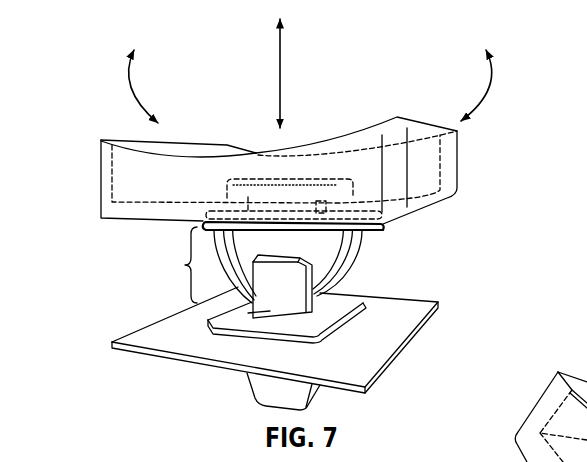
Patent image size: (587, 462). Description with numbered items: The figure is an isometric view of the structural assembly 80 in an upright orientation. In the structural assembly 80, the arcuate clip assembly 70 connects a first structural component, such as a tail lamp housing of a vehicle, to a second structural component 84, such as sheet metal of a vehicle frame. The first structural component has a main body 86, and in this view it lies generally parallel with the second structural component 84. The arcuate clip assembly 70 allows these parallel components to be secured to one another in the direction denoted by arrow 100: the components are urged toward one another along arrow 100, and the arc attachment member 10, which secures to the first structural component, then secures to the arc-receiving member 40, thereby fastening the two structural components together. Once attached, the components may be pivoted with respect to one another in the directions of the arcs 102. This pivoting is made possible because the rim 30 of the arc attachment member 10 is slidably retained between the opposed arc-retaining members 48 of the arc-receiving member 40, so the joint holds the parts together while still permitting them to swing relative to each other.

The arc attachment member 10 is at (325, 257).
The rim 30 is at (365, 251).
The arc-receiving member 40 is at (366, 290).
The arc-retaining members 48 is at (263, 287).
The arcuate clip assembly 70 is at (177, 265).
The structural assembly 80 is at (329, 145).
The second structural component 84 is at (430, 301).
The main body 86 is at (408, 118).
The arrow 100 is at (282, 76).
The arcs 102 is at (134, 94).